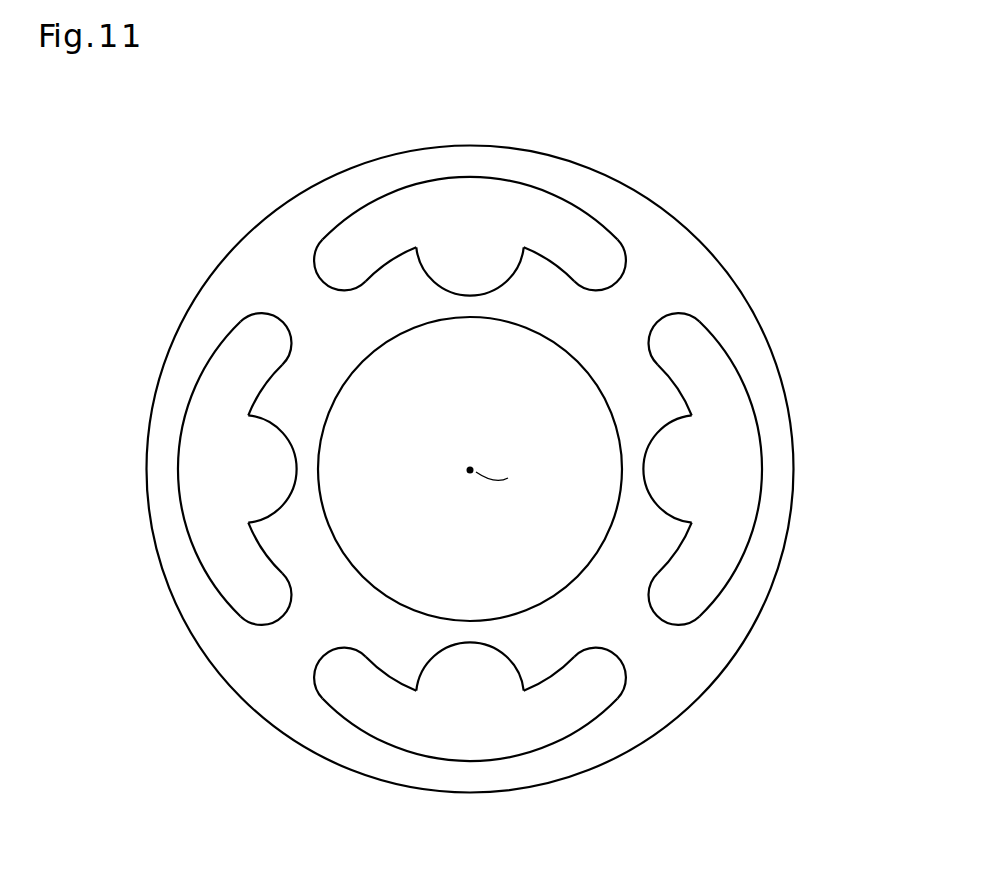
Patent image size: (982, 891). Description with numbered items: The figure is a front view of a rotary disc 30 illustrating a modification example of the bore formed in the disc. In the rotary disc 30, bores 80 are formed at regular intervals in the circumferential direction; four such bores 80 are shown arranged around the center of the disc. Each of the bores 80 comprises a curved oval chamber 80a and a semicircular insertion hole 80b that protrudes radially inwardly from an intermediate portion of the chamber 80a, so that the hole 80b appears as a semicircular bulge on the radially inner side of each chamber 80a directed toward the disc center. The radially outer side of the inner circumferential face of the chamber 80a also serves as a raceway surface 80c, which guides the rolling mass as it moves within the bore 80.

The rotary disc 30 is at (612, 143).
The bore 80 is at (463, 469).
The curved oval chamber 80a is at (350, 232).
The semicircular insertion hole 80b is at (471, 290).
The raceway surface 80c is at (473, 180).